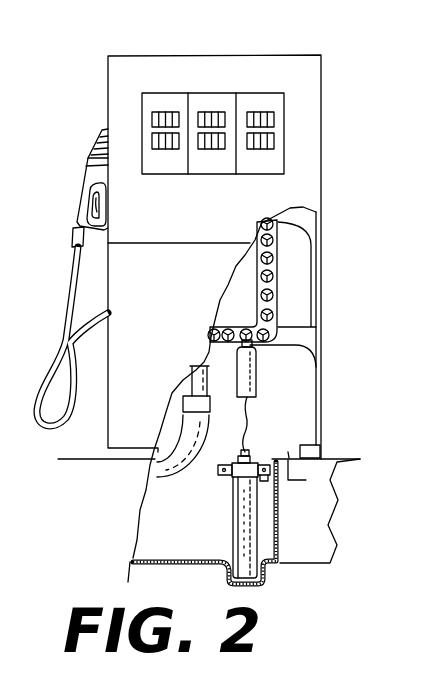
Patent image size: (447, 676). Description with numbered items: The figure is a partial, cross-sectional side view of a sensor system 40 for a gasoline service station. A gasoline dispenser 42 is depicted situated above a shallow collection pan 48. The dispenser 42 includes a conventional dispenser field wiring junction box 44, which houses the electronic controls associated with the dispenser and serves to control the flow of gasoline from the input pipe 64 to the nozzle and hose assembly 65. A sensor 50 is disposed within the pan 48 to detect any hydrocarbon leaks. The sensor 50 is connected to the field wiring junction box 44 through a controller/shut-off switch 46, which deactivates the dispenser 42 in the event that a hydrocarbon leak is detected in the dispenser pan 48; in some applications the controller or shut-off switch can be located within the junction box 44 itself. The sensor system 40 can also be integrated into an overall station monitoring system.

The sensor system 40 is at (335, 250).
The gasoline dispenser 42 is at (222, 217).
The dispenser field wiring junction box 44 is at (248, 304).
The controller/shut-off switch 46 is at (257, 375).
The shallow collection pan 48 is at (204, 556).
The sensor 50 is at (240, 501).
The input pipe 64 is at (183, 428).
The nozzle and hose assembly 65 is at (72, 254).